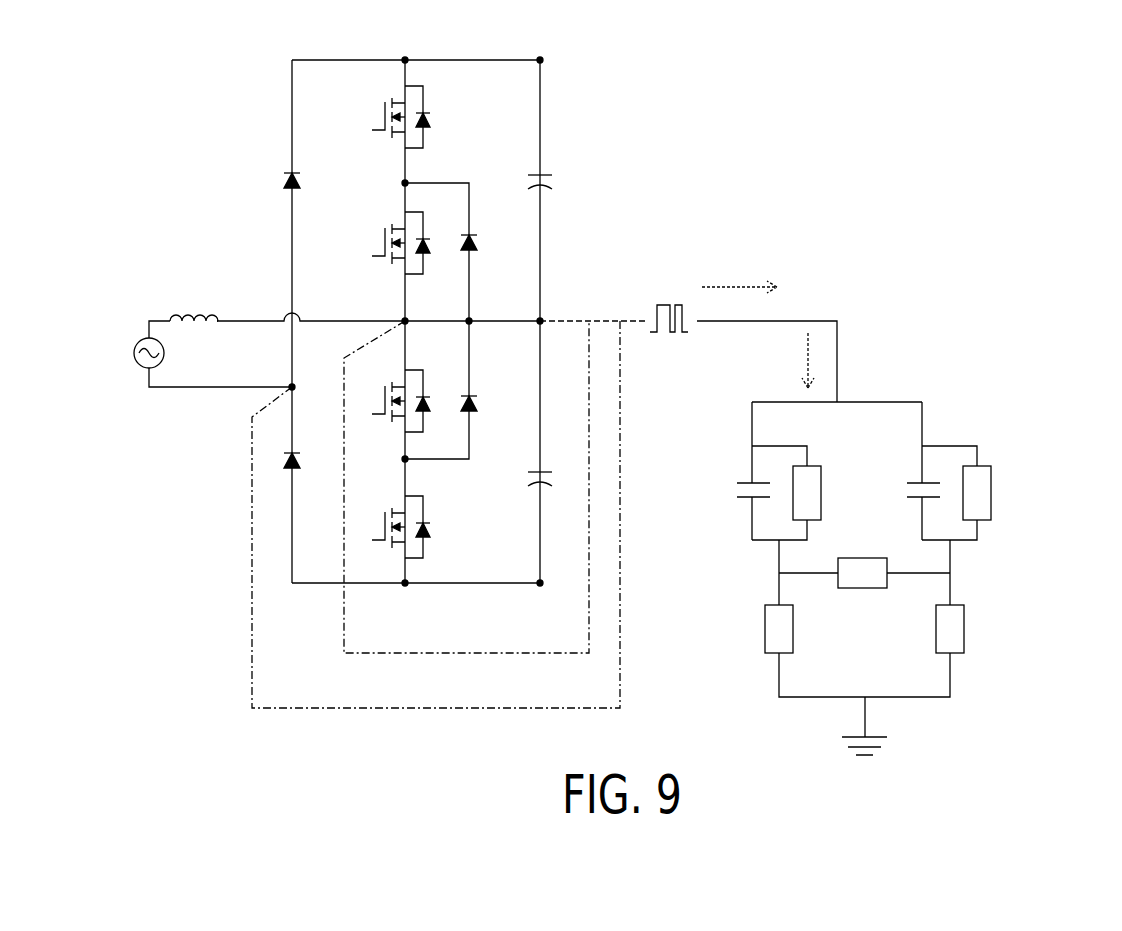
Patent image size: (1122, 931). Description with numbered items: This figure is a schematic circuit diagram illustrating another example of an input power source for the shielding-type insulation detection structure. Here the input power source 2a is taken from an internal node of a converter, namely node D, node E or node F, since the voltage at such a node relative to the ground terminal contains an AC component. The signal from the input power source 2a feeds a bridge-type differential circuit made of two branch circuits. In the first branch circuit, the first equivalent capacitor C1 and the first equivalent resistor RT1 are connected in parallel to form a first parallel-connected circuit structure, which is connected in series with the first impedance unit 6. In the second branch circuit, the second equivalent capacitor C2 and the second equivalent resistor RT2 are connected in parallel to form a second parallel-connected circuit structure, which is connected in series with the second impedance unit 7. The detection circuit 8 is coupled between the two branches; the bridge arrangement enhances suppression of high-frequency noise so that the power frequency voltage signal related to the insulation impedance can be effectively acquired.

The input power source 2a is at (632, 135).
The first impedance unit 6 is at (778, 628).
The second impedance unit 7 is at (953, 628).
The detection circuit 8 is at (864, 560).
The first equivalent capacitor C1 is at (737, 494).
The second equivalent capacitor C2 is at (906, 490).
The first equivalent resistor RT1 is at (829, 493).
The second equivalent resistor RT2 is at (999, 493).